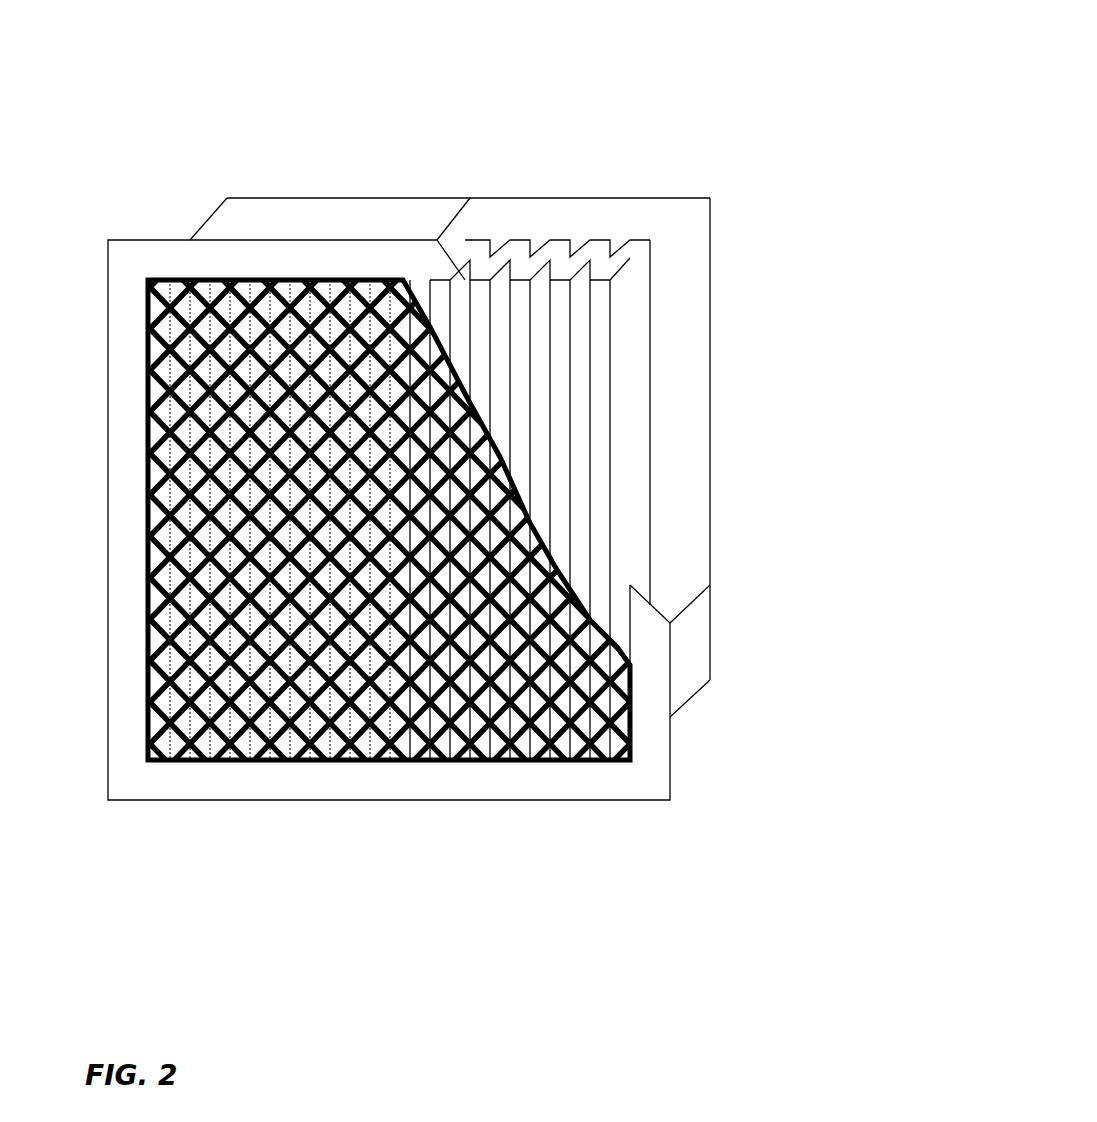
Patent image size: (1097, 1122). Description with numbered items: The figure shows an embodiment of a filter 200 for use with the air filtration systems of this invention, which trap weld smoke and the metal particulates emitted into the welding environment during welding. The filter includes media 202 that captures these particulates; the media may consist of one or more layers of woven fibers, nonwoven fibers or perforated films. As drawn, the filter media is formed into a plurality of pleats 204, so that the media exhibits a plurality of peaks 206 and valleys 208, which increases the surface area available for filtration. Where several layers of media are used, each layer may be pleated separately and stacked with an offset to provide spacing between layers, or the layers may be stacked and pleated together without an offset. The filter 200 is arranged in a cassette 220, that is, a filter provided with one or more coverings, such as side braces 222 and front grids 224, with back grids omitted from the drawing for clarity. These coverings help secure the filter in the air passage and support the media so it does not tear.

The filter 200 is at (184, 90).
The media 202 is at (633, 437).
The pleats 204 is at (620, 257).
The peaks 206 is at (557, 297).
The valleys 208 is at (542, 283).
The cassette 220 is at (230, 228).
The side braces 222 is at (385, 210).
The front grids 224 is at (515, 760).